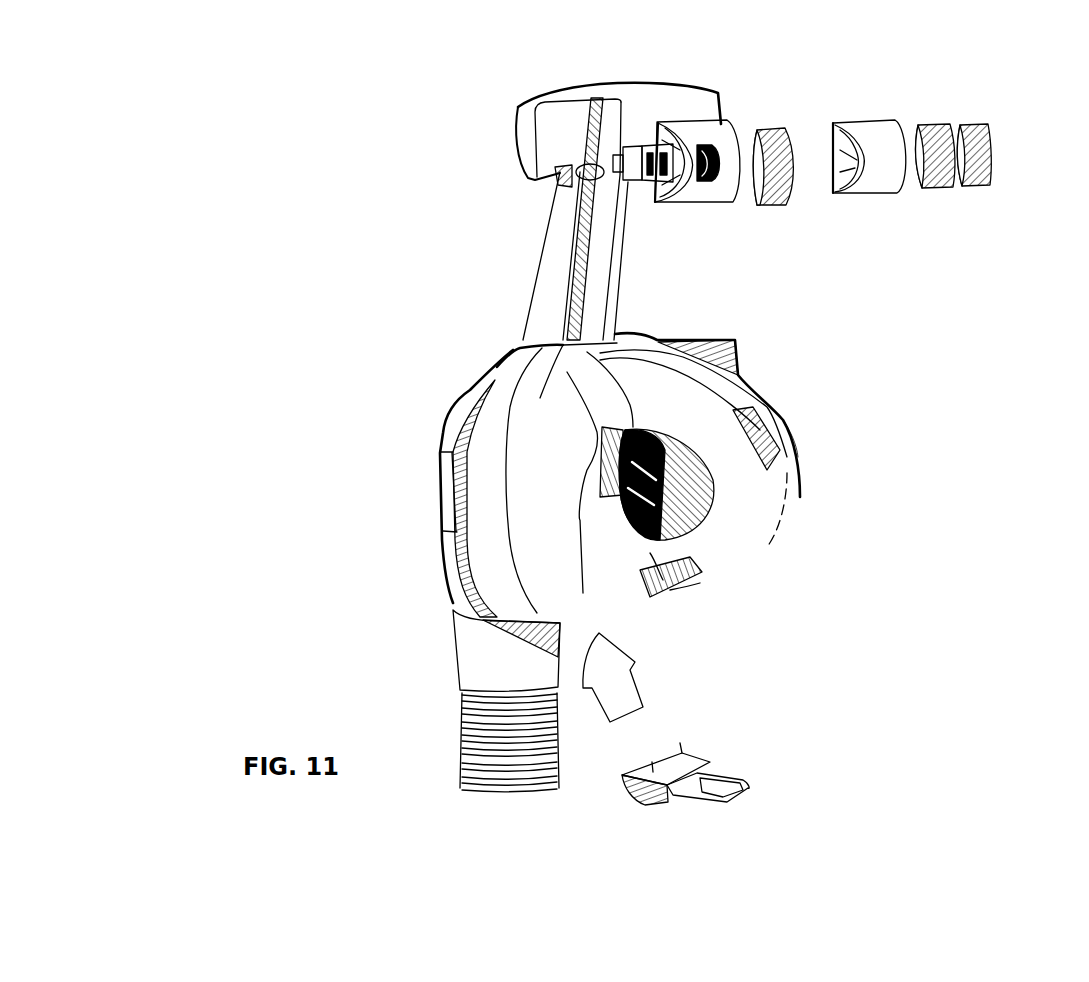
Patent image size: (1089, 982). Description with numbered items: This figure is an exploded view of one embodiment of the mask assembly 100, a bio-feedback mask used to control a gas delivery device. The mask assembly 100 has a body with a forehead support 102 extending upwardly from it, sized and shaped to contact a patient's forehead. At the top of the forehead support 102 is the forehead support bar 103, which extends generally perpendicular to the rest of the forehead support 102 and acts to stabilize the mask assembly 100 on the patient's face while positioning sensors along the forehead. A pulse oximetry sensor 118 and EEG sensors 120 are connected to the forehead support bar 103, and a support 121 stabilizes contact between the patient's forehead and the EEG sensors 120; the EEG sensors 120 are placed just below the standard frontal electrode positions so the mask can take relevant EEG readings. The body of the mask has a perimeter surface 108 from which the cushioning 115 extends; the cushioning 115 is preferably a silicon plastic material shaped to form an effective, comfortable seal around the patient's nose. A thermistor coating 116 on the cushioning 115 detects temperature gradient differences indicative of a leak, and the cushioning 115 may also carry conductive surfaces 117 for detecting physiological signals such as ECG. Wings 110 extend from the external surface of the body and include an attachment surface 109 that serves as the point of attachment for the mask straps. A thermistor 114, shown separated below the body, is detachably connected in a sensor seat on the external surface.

The mask assembly 100 is at (332, 147).
The forehead support 102 is at (547, 247).
The forehead support bar 103 is at (683, 87).
The perimeter surface 108 is at (535, 395).
The attachment surface 109 is at (457, 531).
The wings 110 is at (440, 483).
The thermistor 114 is at (760, 790).
The cushioning 115 is at (780, 490).
The thermistor coating 116 is at (707, 578).
The conductive surfaces 117 is at (778, 412).
The pulse oximetry sensor 118 is at (635, 143).
The EEG sensors 120 is at (770, 125).
The support 121 is at (897, 125).